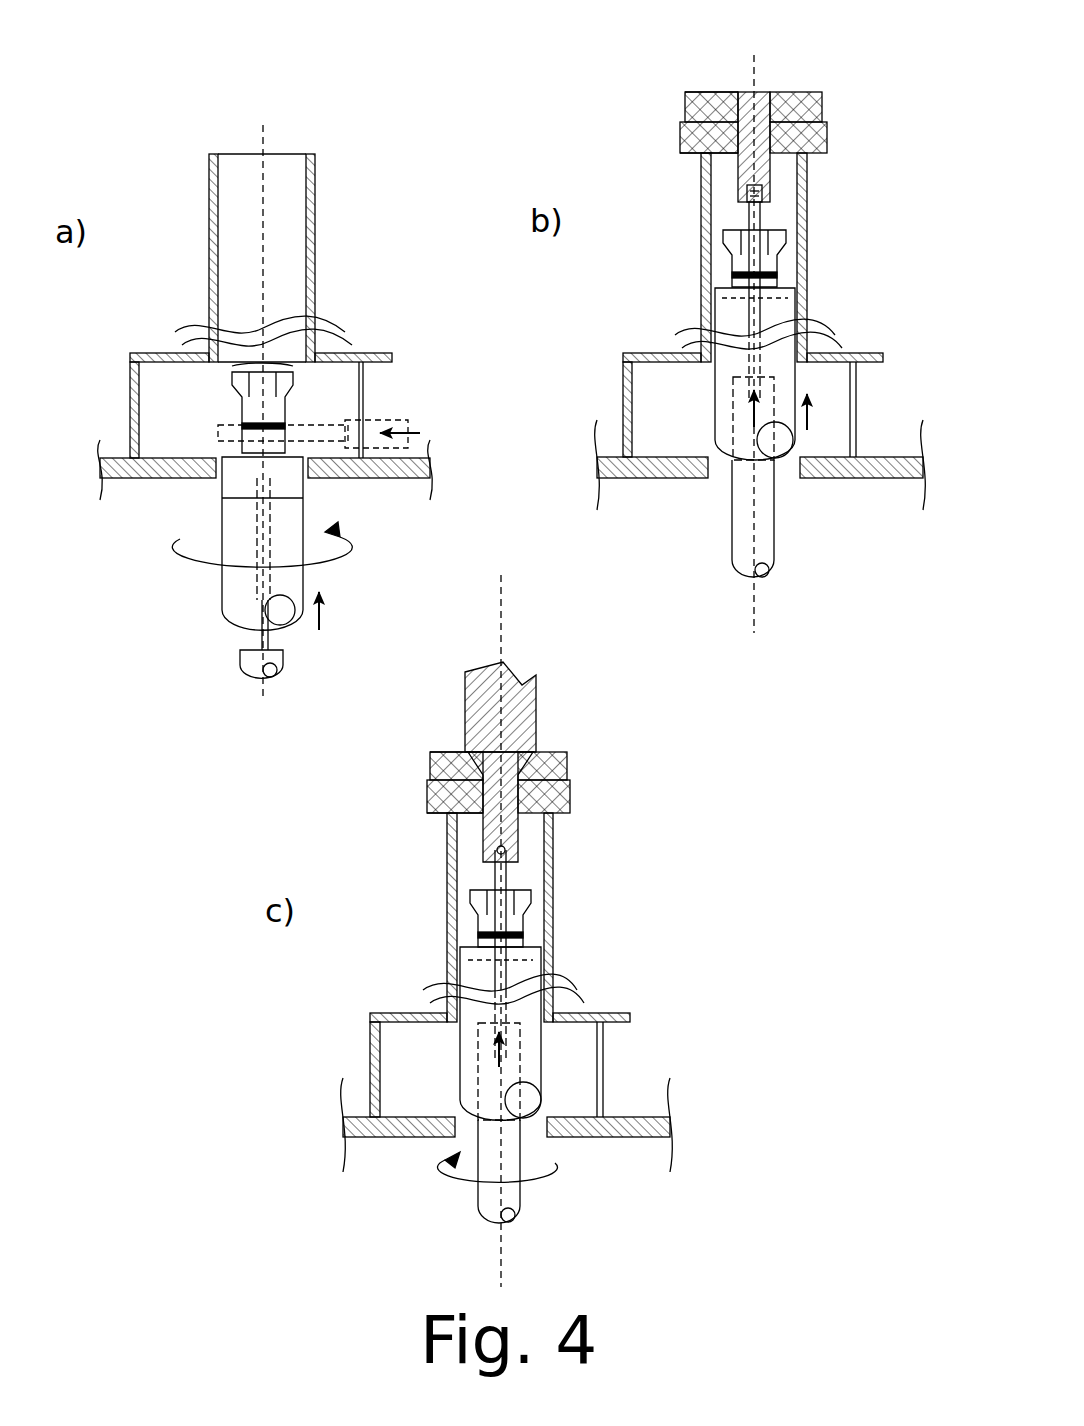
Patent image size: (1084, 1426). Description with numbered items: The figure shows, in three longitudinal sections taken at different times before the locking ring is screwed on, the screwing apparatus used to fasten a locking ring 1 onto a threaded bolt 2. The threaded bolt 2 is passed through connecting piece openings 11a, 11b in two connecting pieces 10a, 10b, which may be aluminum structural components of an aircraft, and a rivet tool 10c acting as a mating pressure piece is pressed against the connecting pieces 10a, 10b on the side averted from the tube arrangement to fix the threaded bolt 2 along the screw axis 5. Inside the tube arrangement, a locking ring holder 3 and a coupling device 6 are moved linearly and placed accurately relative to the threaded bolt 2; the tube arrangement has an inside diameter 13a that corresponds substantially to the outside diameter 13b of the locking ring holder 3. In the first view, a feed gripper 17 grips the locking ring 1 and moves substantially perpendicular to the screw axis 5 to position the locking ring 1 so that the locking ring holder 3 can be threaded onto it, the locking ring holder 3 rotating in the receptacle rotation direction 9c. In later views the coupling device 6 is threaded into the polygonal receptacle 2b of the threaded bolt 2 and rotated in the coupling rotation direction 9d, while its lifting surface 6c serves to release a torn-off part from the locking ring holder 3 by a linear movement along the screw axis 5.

The locking ring 1 is at (228, 396).
The threaded bolt 2 is at (754, 95).
The polygonal receptacle 2b is at (745, 205).
The locking ring holder 3 is at (240, 480).
The screw axis 5 is at (263, 148).
The coupling device 6 is at (280, 520).
The lifting surface 6c is at (285, 642).
The receptacle rotation direction 9c is at (345, 560).
The coupling rotation direction 9d is at (450, 1185).
The connecting piece 10a is at (812, 100).
The connecting piece 10b is at (812, 135).
The rivet tool 10c is at (530, 715).
The connecting piece opening 11a is at (735, 110).
The connecting piece opening 11b is at (735, 143).
The inside diameter 13a is at (306, 125).
The outside diameter 13b is at (263, 368).
The feed gripper 17 is at (345, 425).